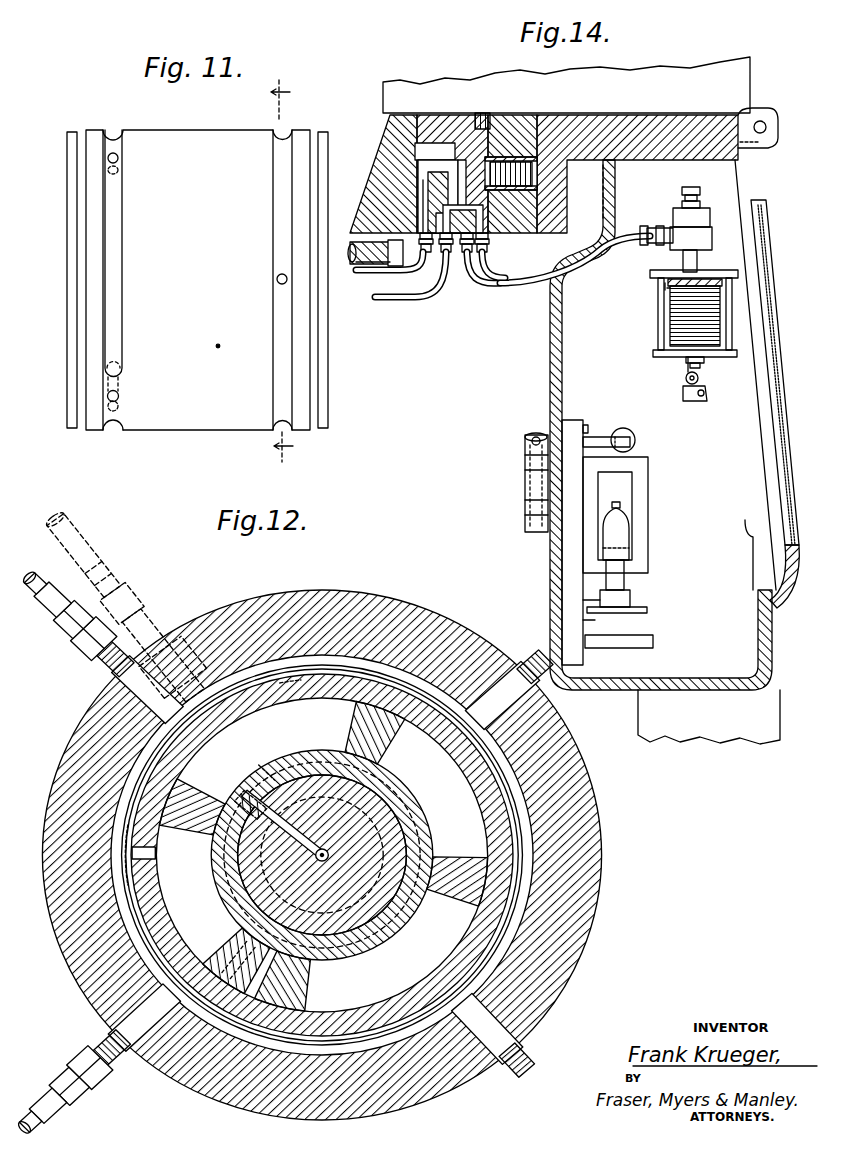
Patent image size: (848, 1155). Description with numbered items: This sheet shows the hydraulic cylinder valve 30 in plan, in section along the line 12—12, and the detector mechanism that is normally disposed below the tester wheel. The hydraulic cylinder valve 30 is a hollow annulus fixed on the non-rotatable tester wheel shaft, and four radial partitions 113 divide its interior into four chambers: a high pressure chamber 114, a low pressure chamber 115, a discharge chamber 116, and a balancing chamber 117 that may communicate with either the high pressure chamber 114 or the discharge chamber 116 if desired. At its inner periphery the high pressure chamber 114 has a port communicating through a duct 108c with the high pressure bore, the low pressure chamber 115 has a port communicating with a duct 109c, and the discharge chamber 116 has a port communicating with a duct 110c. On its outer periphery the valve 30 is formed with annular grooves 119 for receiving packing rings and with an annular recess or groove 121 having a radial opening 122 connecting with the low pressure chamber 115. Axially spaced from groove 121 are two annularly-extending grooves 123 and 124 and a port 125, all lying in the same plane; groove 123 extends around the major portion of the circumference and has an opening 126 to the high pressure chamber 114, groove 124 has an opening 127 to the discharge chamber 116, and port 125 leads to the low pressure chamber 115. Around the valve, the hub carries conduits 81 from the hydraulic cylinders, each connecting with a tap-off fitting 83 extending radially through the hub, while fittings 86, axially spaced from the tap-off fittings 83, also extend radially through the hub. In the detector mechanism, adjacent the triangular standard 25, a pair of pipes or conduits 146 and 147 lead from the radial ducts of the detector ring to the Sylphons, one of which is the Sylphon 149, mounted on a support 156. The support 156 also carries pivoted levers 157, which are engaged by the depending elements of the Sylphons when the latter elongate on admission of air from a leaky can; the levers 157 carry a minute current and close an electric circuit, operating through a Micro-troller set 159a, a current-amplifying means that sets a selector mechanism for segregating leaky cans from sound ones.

In FIG. 11, the section line 12— 12 is at (285, 269).
In FIG. 11, the hydraulic cylinder valve 30 is at (188, 280).
In FIG. 11, the annular grooves 119 is at (82, 432).
In FIG. 11, the annular recess or groove 121 is at (277, 392).
In FIG. 12, the annular recess or groove 121 is at (128, 892).
In FIG. 11, the radial opening 122 is at (280, 284).
In FIG. 12, the radial opening 122 is at (150, 853).
In FIG. 11, the annularly-extending groove 123 is at (120, 254).
In FIG. 11, the annularly-extending groove 124 is at (116, 434).
In FIG. 11, the port 125 is at (119, 397).
In FIG. 12, the port 125 is at (228, 997).
In FIG. 11, the opening 126 is at (120, 159).
In FIG. 12, the opening 126 is at (300, 774).
In FIG. 14, the standard 25 is at (674, 452).
In FIG. 14, the pipe or conduit 146 is at (470, 282).
In FIG. 14, the pipe or conduit 147 is at (515, 285).
In FIG. 14, the Sylphon 149 is at (668, 286).
In FIG. 14, the support 156 is at (655, 327).
In FIG. 14, the pivoted levers 157 is at (686, 378).
In FIG. 14, the Micro-troller set 159a is at (637, 569).
In FIG. 12, the conduits 81 is at (122, 562).
In FIG. 12, the tap-off fitting 83 is at (166, 598).
In FIG. 12, the fittings 86 is at (115, 664).
In FIG. 12, the duct 108c is at (274, 760).
In FIG. 12, the duct 109c is at (226, 924).
In FIG. 12, the duct 110c is at (445, 927).
In FIG. 12, the radial partitions 113 is at (198, 808).
In FIG. 12, the high pressure chamber 114 is at (294, 692).
In FIG. 12, the low pressure chamber 115 is at (197, 916).
In FIG. 12, the discharge chamber 116 is at (354, 985).
In FIG. 12, the balancing chamber 117 is at (449, 785).
In FIG. 12, the opening 127 is at (388, 1000).